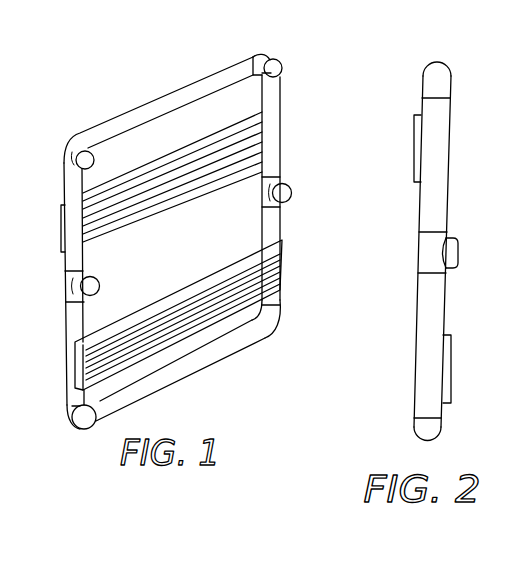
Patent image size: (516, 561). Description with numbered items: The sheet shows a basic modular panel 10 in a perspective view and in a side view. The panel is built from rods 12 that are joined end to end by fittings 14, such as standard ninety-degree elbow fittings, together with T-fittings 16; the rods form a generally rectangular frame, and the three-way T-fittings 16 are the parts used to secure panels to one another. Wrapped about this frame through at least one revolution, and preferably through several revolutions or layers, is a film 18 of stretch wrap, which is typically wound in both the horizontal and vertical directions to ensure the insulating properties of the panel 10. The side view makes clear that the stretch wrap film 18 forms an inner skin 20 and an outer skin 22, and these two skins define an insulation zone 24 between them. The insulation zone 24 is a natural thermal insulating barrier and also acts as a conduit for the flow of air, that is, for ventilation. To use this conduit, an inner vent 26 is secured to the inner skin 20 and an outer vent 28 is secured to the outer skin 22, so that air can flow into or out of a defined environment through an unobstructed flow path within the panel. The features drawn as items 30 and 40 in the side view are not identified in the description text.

In FIG. 1, the modular panel 10 is at (136, 69).
In FIG. 1, the rods 12 is at (281, 127).
In FIG. 1, the fittings 14 is at (268, 56).
In FIG. 1, the T-fittings 16 is at (64, 289).
In FIG. 1, the film 18 is at (169, 251).
In FIG. 2, the inner skin 20 is at (450, 198).
In FIG. 2, the outer skin 22 is at (413, 318).
In FIG. 2, the insulation zone 24 is at (456, 105).
In FIG. 2, the inner vent 26 is at (452, 362).
In FIG. 2, the outer vent 28 is at (414, 147).
In FIG. 2, the boss 30 is at (480, 252).
In FIG. 2, the lower fitting 40 is at (465, 400).